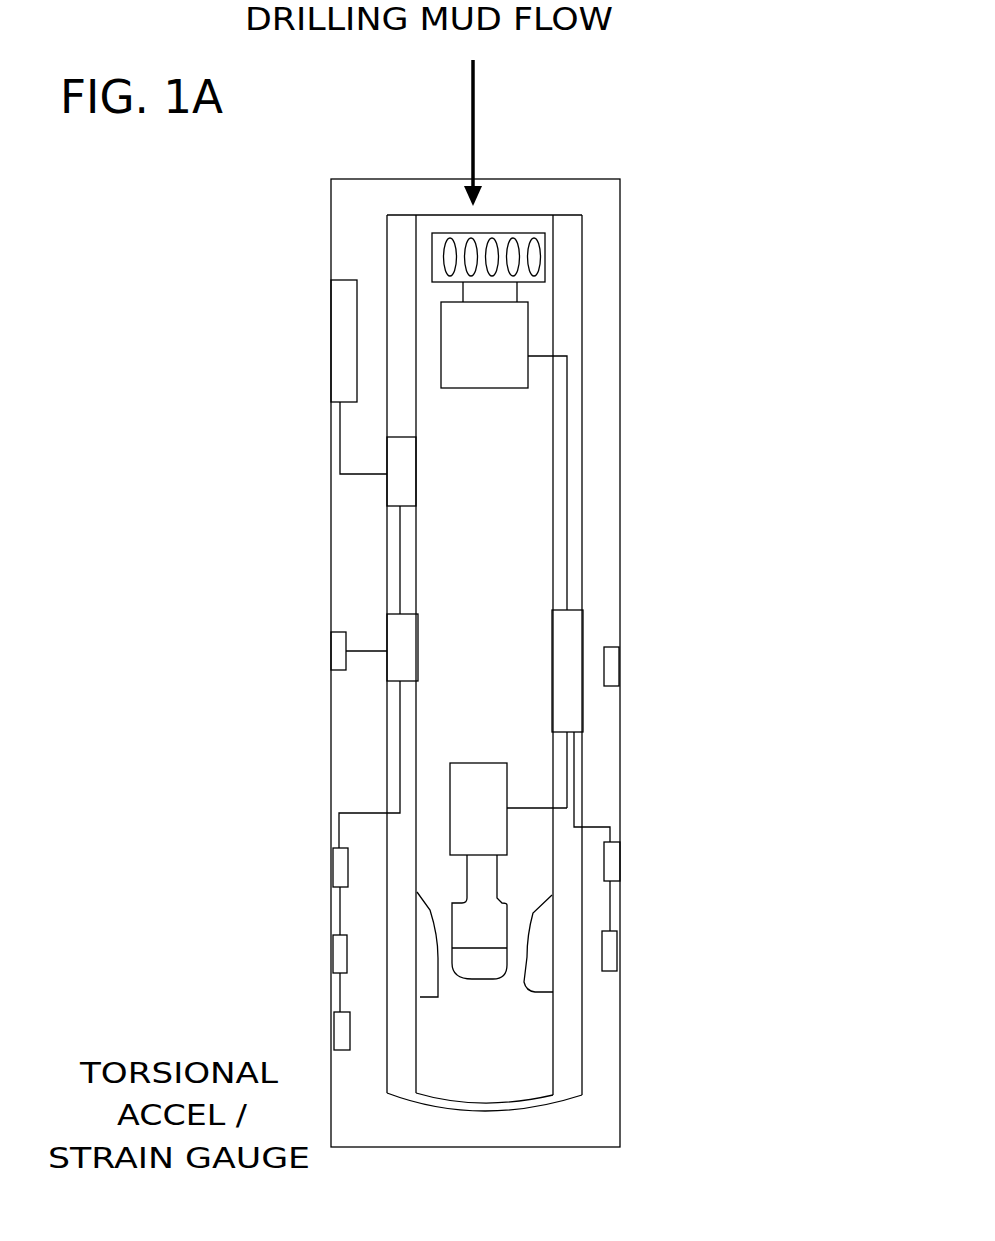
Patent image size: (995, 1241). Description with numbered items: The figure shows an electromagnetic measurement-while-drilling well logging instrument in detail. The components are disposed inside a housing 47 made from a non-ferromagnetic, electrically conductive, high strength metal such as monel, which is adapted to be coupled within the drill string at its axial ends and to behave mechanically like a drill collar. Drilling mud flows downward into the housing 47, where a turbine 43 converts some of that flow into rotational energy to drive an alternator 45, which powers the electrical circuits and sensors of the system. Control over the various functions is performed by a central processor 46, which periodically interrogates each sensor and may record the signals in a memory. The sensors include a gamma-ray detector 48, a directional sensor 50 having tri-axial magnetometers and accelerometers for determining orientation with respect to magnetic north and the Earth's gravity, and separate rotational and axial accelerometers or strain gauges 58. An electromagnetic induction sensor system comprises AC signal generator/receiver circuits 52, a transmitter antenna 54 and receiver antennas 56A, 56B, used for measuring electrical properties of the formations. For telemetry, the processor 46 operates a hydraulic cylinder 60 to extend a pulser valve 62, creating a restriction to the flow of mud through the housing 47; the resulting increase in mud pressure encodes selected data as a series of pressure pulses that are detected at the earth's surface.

The turbine 43 is at (520, 240).
The alternator 45 is at (508, 328).
The central processor 46 is at (563, 631).
The housing 47 is at (620, 368).
The gamma-ray detector 48 is at (337, 357).
The directional sensor 50 is at (397, 488).
The AC signal generator/receiver circuits 52 is at (395, 658).
The transmitter antenna 54 is at (334, 656).
The receiver antenna 56A is at (335, 867).
The receiver antenna 56B is at (337, 952).
The rotational/axial accelerometers or strain gauges 58 is at (338, 1030).
The hydraulic cylinder 60 is at (482, 773).
The pulser valve 62 is at (482, 960).